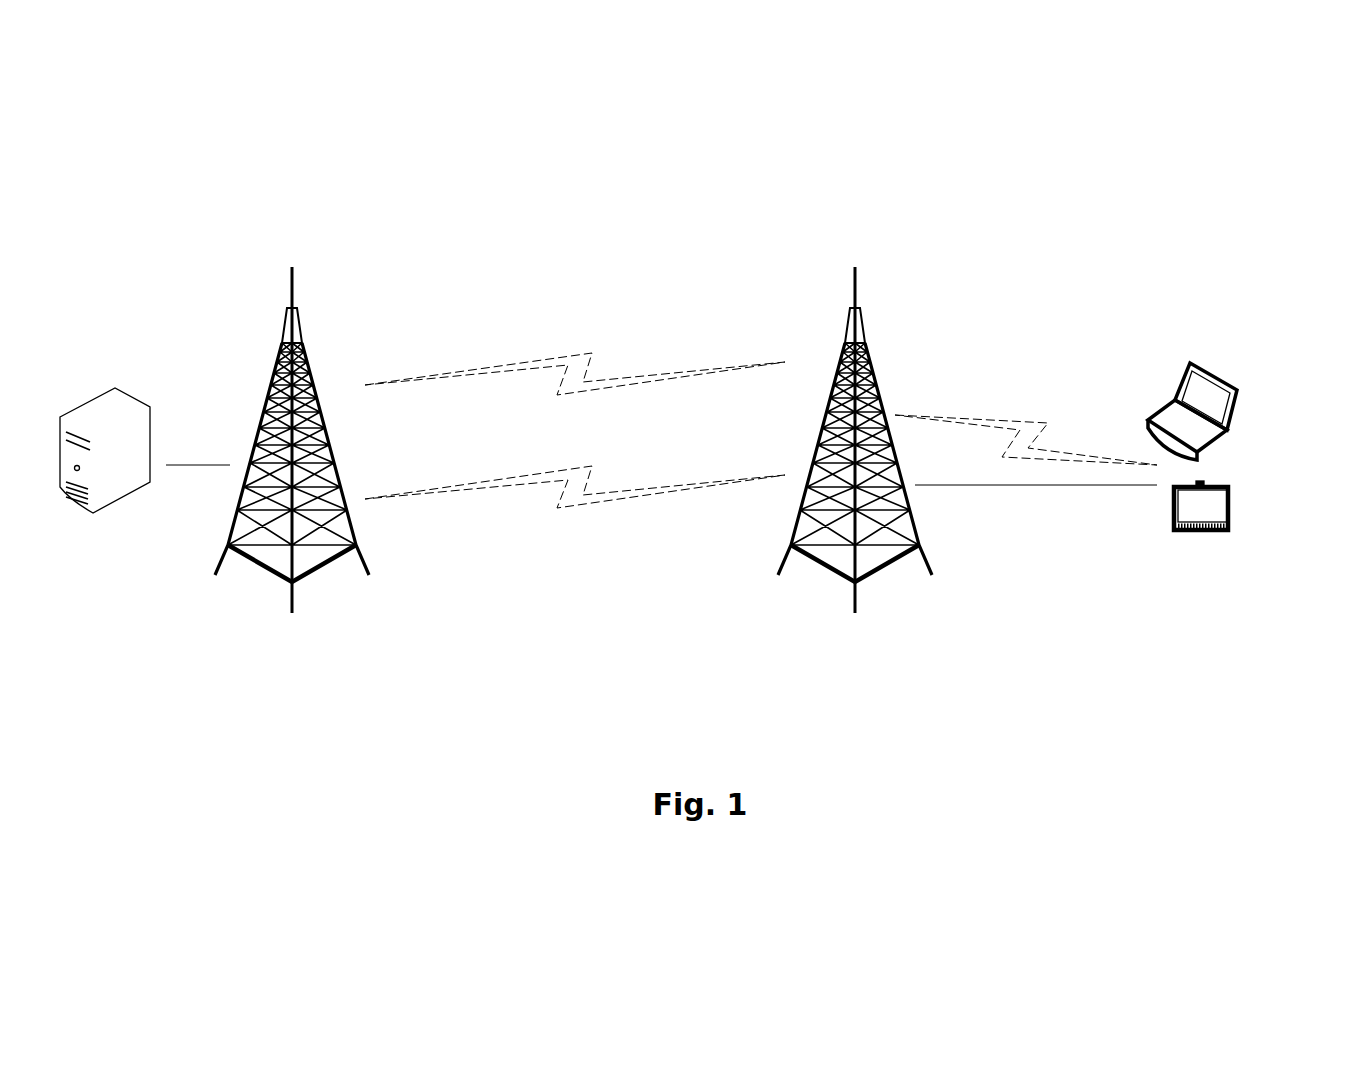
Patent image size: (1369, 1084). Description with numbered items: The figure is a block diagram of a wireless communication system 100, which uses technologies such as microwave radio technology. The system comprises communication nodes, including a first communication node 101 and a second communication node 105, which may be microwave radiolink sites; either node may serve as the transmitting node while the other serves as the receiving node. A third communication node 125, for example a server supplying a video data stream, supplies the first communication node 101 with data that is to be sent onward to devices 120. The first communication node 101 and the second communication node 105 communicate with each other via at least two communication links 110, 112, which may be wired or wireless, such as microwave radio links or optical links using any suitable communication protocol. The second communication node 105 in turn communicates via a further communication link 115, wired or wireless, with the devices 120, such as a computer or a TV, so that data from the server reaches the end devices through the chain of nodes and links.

The wireless communication system 100 is at (1014, 262).
The first communication node 101 is at (305, 577).
The second communication node 105 is at (878, 565).
The communication link 110 is at (617, 500).
The communication link 112 is at (667, 378).
The communication link 115 is at (1048, 457).
The devices 120 is at (1235, 422).
The third communication node 125 is at (108, 474).